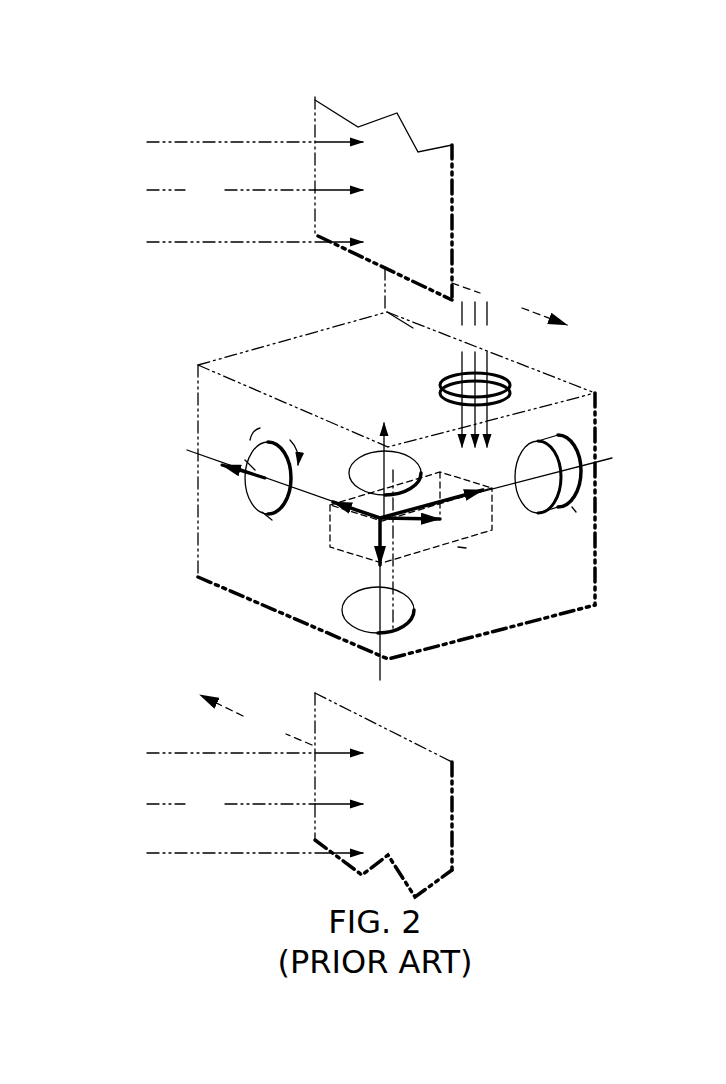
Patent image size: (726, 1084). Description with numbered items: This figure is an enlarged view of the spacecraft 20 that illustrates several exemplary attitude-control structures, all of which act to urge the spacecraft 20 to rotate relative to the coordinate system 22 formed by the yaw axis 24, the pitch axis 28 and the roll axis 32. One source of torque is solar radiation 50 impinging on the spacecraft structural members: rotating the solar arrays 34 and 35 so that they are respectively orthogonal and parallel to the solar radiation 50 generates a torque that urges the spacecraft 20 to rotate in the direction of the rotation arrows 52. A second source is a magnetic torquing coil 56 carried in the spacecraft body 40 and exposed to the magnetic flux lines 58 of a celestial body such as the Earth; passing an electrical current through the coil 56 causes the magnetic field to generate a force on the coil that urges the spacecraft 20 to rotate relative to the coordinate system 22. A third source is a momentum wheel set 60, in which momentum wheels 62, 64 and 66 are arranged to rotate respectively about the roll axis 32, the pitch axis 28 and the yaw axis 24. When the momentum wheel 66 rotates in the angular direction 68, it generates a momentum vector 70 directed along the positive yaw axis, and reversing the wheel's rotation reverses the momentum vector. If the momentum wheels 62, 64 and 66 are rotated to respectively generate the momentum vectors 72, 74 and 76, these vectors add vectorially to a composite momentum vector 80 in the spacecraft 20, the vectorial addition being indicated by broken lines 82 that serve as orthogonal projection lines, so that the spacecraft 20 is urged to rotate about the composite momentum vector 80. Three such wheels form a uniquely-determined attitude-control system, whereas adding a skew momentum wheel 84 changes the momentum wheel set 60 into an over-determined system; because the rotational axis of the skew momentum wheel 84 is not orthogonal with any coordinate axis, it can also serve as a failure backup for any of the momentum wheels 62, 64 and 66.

The spacecraft 20 is at (597, 288).
The coordinate system 22 is at (375, 663).
The yaw axis 24 is at (117, 423).
The pitch axis 28 is at (380, 777).
The roll axis 32 is at (690, 438).
The solar array 34 is at (455, 176).
The solar array 35 is at (457, 817).
The spacecraft body 40 is at (242, 352).
The solar radiation 50 is at (255, 497).
The rotation arrows 52 is at (383, 514).
The magnetic torquing coil 56 is at (440, 385).
The magnetic flux lines 58 is at (475, 374).
The momentum wheel set 60 is at (238, 505).
The momentum wheel 62 is at (533, 437).
The momentum wheel 64 is at (415, 612).
The momentum wheel 66 is at (262, 520).
The angular direction 68 is at (271, 463).
The momentum vector 70 is at (242, 465).
The momentum vector 72 is at (488, 522).
The momentum vector 74 is at (373, 547).
The momentum vector 76 is at (350, 512).
The composite momentum vector 80 is at (410, 525).
The broken lines 82 is at (458, 547).
The skew momentum wheel 84 is at (353, 457).